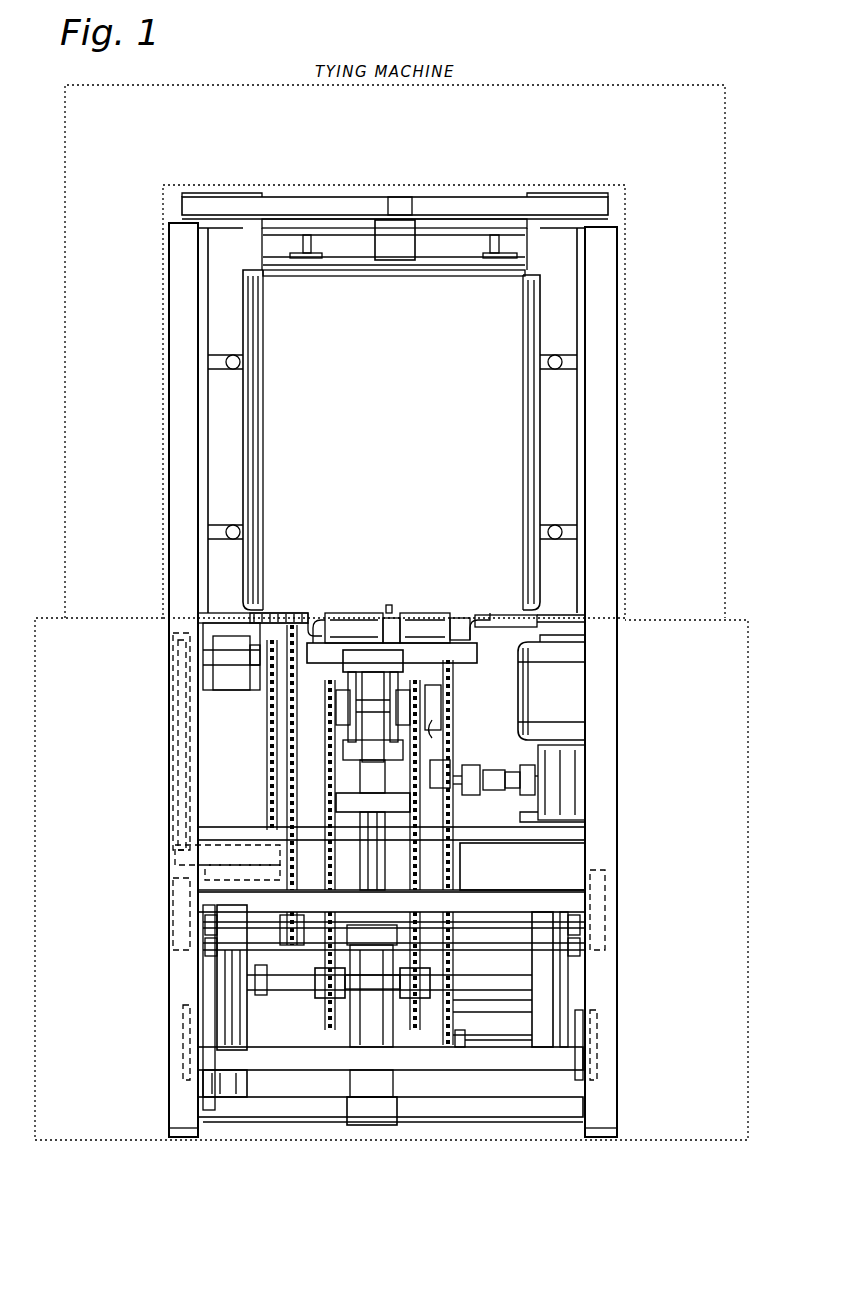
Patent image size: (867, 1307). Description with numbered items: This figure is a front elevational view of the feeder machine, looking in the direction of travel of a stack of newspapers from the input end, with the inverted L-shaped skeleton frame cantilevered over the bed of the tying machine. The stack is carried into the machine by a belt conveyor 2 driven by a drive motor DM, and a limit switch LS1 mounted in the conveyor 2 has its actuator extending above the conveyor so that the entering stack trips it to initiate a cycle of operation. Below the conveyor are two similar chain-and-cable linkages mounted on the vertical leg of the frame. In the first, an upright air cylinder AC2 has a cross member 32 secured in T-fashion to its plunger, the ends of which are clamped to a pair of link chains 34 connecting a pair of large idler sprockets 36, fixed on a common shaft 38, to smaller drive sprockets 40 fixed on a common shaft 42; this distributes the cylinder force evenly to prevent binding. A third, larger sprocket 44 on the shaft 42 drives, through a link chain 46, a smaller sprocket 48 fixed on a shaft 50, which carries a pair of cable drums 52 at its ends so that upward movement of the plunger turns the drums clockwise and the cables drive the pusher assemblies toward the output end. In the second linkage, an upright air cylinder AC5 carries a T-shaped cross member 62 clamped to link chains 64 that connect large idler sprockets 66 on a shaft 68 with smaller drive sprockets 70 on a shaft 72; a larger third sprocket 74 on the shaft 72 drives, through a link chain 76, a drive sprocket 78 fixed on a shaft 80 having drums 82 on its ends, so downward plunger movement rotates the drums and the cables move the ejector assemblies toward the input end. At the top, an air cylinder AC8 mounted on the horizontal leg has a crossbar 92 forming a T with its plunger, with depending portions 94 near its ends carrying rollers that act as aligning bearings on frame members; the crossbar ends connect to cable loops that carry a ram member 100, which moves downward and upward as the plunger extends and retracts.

The belt conveyor 2 is at (428, 612).
The cross member 32 is at (175, 858).
The link chains 34 is at (190, 758).
The idler sprockets 36 is at (170, 961).
The shaft 38 is at (205, 955).
The drive sprockets 40 is at (292, 625).
The shaft 42 is at (232, 660).
The third sprocket 44 is at (314, 625).
The link chain 46 is at (290, 812).
The sprocket 48 is at (288, 925).
The shaft 50 is at (205, 918).
The cable drums 52 is at (165, 893).
The T-shaped cross member 62 is at (377, 810).
The link chains 64 is at (325, 1022).
The idler sprockets 66 is at (318, 997).
The shaft 68 is at (520, 987).
The drive sprockets 70 is at (428, 690).
The shaft 72 is at (437, 726).
The third sprocket 74 is at (455, 707).
The link chain 76 is at (455, 878).
The drive sprocket 78 is at (462, 1042).
The shaft 80 is at (512, 1047).
The drums 82 is at (185, 1031).
The crossbar 92 is at (332, 228).
The depending portions 94 is at (305, 250).
The ram member 100 is at (342, 276).
The air cylinder AC2 is at (227, 1090).
The air cylinder AC5 is at (375, 1092).
The air cylinder AC8 is at (397, 256).
The drive motor DM is at (578, 690).
The limit switch LS1 is at (388, 606).